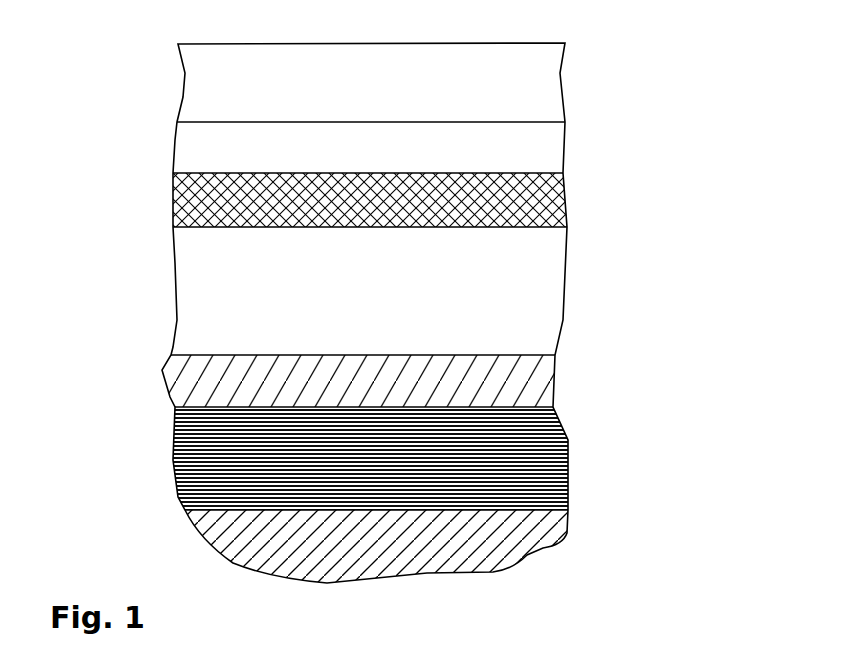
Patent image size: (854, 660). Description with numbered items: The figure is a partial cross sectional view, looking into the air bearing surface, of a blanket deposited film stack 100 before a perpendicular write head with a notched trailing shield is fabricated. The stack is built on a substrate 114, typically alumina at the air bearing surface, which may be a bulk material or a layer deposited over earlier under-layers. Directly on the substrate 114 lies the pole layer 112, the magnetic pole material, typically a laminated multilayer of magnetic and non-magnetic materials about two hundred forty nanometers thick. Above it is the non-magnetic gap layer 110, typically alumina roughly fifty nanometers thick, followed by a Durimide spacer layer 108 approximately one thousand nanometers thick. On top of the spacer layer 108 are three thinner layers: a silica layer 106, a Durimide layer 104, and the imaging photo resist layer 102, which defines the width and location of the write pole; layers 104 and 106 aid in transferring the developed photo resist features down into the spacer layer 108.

The film stack 100 is at (628, 69).
The photo resist layer 102 is at (331, 104).
The layer 104 is at (336, 158).
The layer 106 is at (333, 210).
The spacer layer 108 is at (341, 295).
The gap layer 110 is at (341, 390).
The pole layer 112 is at (356, 468).
The substrate 114 is at (361, 552).